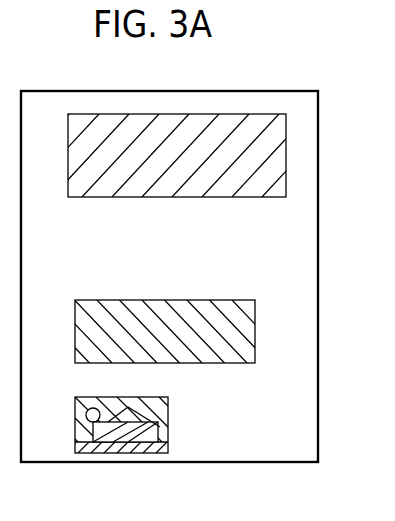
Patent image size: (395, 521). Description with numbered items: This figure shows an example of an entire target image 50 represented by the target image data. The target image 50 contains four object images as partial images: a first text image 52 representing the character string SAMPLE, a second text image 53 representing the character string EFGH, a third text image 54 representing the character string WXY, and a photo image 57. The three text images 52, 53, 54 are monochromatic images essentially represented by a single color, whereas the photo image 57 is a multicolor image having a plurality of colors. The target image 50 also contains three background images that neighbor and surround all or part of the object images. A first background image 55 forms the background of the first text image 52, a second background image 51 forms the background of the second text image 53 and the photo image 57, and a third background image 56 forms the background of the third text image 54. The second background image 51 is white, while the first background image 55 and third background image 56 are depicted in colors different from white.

The target image 50 is at (253, 91).
The second background image 51 is at (292, 102).
The first text image 52 is at (263, 165).
The second text image 53 is at (226, 248).
The third text image 54 is at (203, 342).
The first background image 55 is at (280, 135).
The third background image 56 is at (250, 312).
The photo image 57 is at (112, 453).